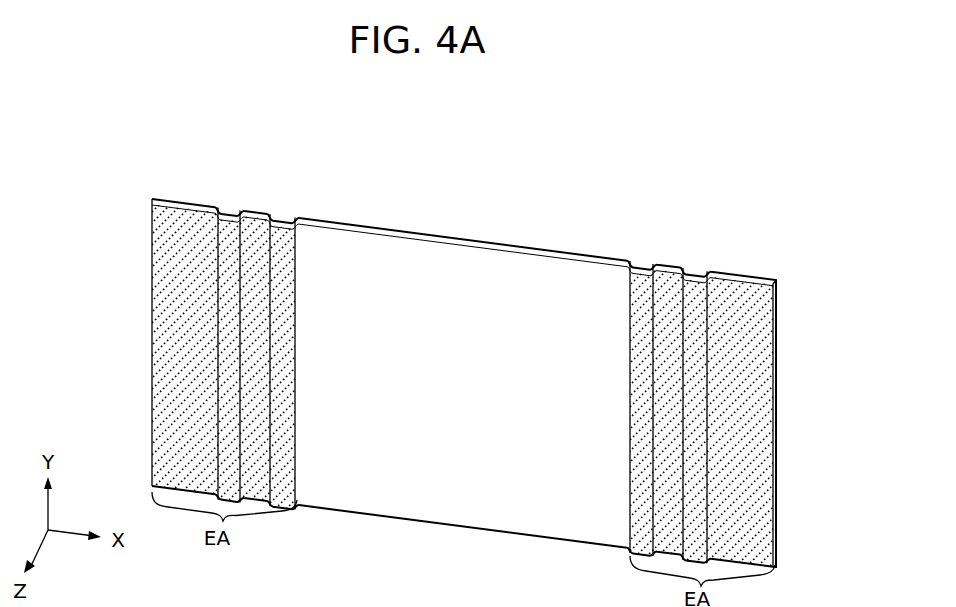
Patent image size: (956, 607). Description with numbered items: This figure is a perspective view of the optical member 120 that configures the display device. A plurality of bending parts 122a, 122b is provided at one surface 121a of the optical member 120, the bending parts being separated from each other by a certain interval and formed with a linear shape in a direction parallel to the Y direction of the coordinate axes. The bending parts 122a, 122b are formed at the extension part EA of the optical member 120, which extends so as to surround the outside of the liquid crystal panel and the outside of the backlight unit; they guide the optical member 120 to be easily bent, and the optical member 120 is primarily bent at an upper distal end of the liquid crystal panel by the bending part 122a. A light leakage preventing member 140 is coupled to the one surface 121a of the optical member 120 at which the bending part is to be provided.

The optical member 120 is at (172, 122).
The one surface of the optical member 121a is at (477, 279).
The bending part 122a is at (285, 310).
The bending part 122b is at (228, 312).
The light leakage preventing member 140 is at (173, 386).